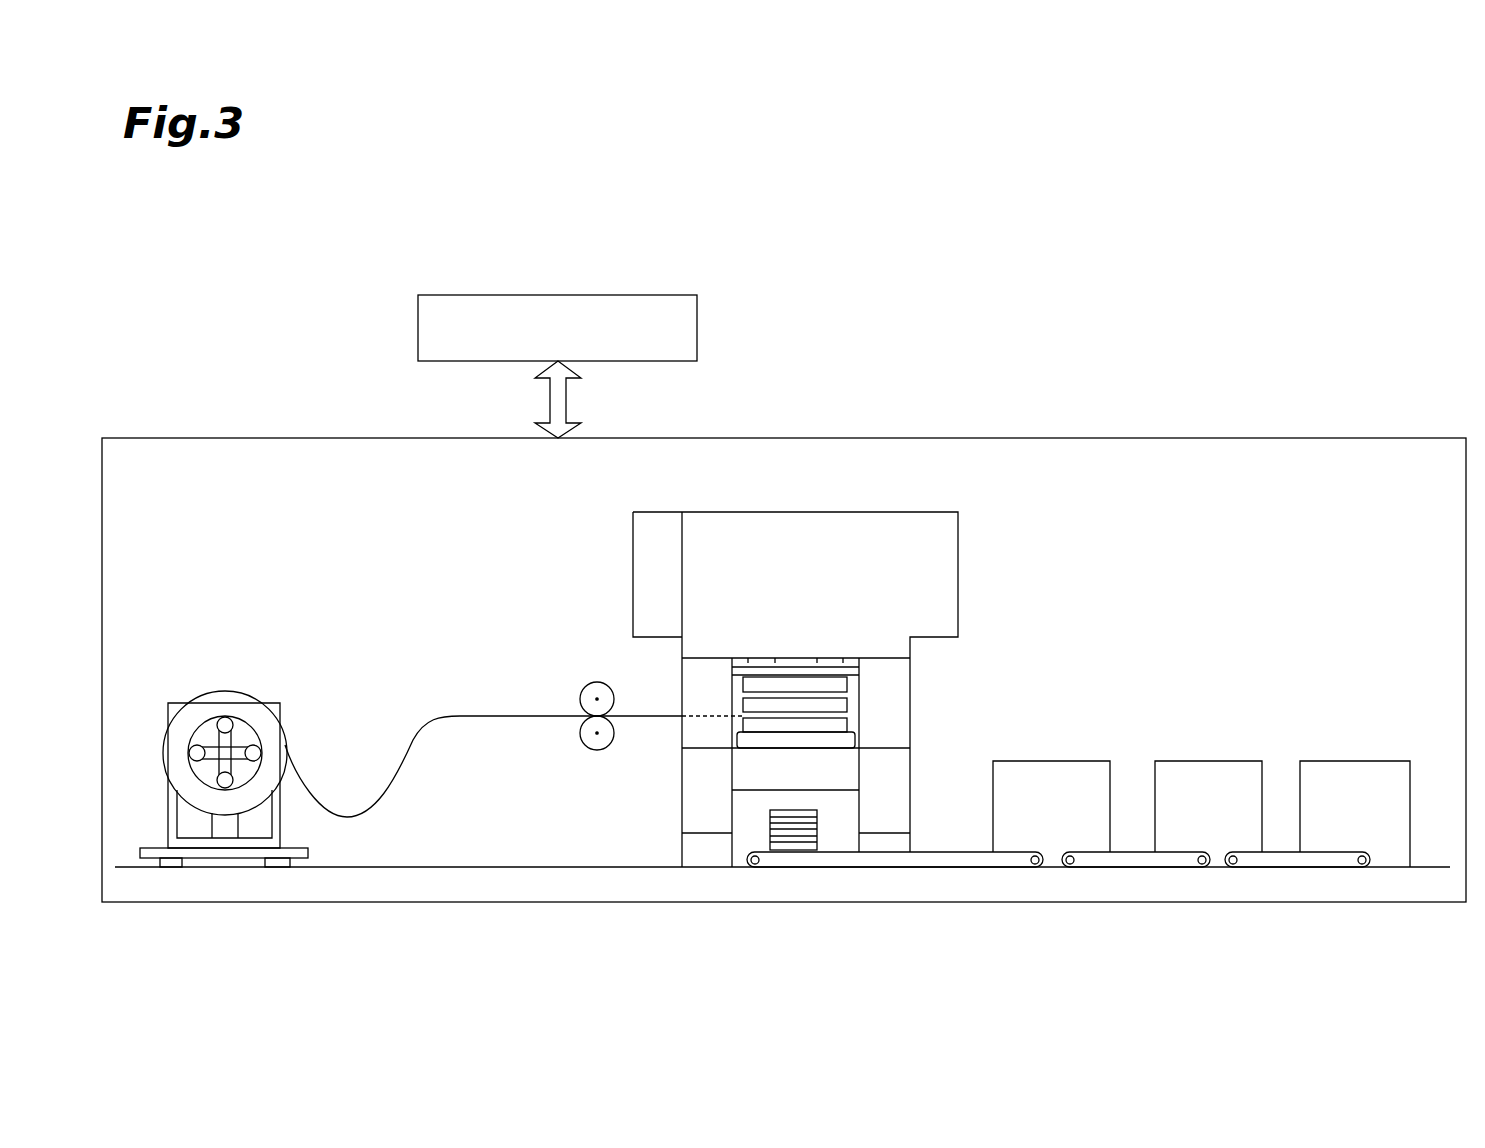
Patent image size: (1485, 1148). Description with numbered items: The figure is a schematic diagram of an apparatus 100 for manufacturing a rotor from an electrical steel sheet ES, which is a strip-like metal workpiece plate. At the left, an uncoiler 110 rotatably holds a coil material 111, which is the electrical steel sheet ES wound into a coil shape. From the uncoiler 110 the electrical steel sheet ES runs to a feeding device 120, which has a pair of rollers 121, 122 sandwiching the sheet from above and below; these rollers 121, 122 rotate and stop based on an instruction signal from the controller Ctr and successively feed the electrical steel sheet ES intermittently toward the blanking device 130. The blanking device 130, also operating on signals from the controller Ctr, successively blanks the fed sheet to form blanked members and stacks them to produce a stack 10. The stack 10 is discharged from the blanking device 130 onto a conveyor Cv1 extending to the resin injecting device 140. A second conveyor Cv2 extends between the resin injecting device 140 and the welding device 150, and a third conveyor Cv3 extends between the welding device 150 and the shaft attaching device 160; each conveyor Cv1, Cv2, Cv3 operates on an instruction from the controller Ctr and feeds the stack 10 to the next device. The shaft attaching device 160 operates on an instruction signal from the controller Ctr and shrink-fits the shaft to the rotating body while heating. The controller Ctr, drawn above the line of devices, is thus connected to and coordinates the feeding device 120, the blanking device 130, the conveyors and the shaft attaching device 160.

The apparatus 100 is at (180, 358).
The controller Ctr is at (697, 328).
The uncoiler 110 is at (180, 707).
The coil material 111 is at (222, 691).
The electrical steel sheet ES is at (303, 780).
The feeding device 120 is at (594, 699).
The roller 121 is at (627, 677).
The roller 122 is at (612, 745).
The blanking device 130 is at (998, 527).
The stack 10 is at (745, 819).
The conveyor Cv1 is at (948, 850).
The conveyor Cv2 is at (1127, 850).
The conveyor Cv3 is at (1278, 850).
The resin injecting device 140 is at (1047, 760).
The welding device 150 is at (1218, 760).
The shaft attaching device 160 is at (1362, 760).